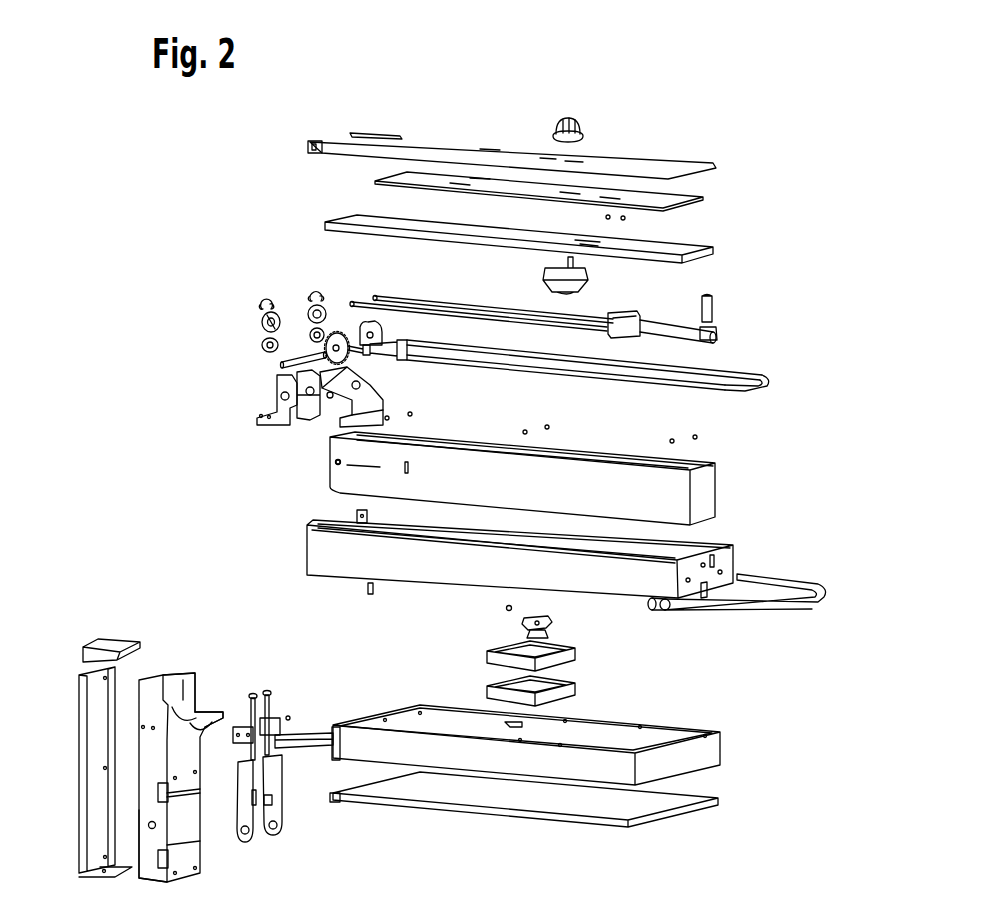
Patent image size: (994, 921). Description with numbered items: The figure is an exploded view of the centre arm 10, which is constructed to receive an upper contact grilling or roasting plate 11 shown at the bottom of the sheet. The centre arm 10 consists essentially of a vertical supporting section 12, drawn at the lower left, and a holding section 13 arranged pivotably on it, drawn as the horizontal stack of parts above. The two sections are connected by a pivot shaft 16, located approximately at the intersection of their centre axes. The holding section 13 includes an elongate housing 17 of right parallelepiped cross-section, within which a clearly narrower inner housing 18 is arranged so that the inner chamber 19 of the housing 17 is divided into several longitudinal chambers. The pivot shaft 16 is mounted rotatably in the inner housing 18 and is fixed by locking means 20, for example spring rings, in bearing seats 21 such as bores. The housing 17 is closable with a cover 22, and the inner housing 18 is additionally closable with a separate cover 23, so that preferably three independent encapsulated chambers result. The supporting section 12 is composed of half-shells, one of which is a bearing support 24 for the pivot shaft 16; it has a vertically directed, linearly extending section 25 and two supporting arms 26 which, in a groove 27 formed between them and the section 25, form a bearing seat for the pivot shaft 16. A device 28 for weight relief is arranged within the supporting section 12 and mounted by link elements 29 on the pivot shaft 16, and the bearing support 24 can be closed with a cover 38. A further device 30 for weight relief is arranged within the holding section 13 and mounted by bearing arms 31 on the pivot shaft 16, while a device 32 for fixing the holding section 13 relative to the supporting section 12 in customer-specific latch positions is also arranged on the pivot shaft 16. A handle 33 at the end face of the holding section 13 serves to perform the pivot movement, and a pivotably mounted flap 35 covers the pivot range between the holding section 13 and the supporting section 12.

The centre arm 10 is at (765, 120).
The upper contact grilling or roasting plate 11 is at (588, 802).
The vertical supporting section 12 is at (62, 760).
The holding section 13 is at (758, 343).
The pivot shaft 16 is at (305, 357).
The housing 17 is at (620, 583).
The inner housing 18 is at (632, 497).
The inner chamber 19 is at (382, 522).
The locking means 20 is at (252, 308).
The bearing seats 21 is at (332, 465).
The cover 22 is at (647, 167).
The separate cover 23 is at (685, 247).
The bearing support 24 is at (155, 765).
The section 25 is at (150, 812).
The supporting arms 26 is at (205, 720).
The groove 27 is at (173, 707).
The device for weight relief 28 is at (260, 660).
The link elements 29 is at (347, 408).
The device for weight relief 30 is at (662, 302).
The bearing arms 31 is at (305, 407).
The fixing device 32 is at (755, 388).
The handle 33 is at (780, 583).
The flap 35 is at (112, 643).
The cover 38 is at (82, 693).